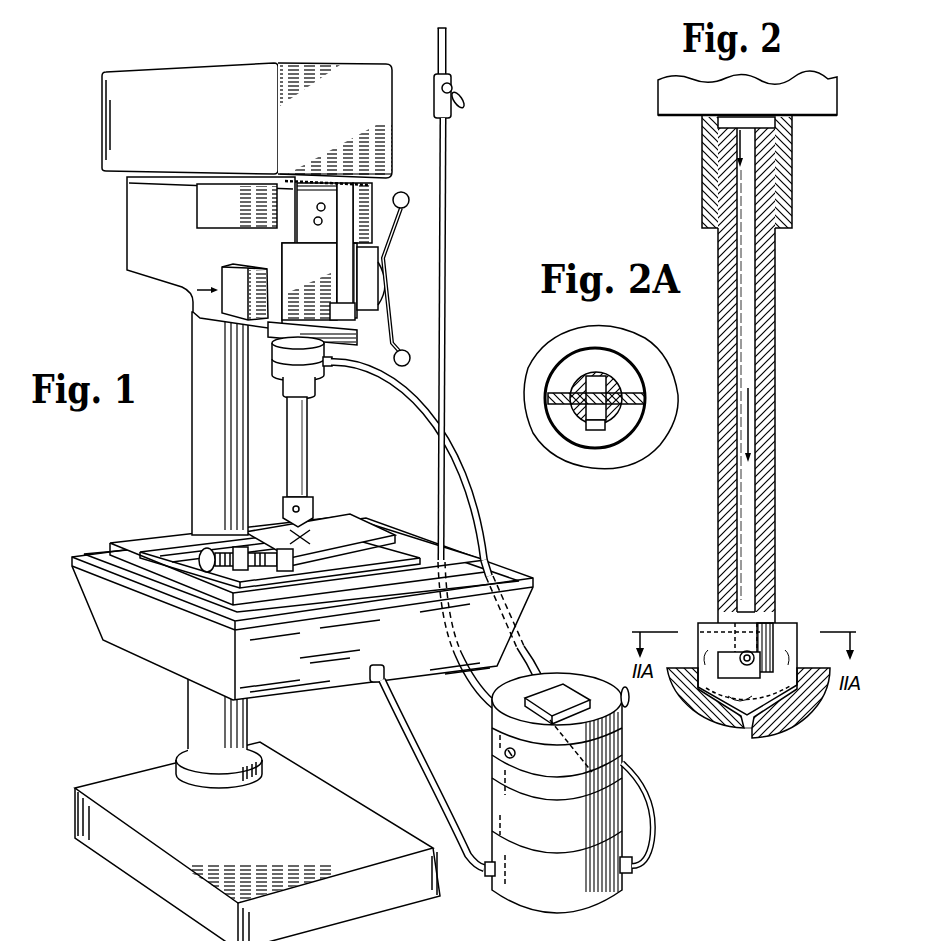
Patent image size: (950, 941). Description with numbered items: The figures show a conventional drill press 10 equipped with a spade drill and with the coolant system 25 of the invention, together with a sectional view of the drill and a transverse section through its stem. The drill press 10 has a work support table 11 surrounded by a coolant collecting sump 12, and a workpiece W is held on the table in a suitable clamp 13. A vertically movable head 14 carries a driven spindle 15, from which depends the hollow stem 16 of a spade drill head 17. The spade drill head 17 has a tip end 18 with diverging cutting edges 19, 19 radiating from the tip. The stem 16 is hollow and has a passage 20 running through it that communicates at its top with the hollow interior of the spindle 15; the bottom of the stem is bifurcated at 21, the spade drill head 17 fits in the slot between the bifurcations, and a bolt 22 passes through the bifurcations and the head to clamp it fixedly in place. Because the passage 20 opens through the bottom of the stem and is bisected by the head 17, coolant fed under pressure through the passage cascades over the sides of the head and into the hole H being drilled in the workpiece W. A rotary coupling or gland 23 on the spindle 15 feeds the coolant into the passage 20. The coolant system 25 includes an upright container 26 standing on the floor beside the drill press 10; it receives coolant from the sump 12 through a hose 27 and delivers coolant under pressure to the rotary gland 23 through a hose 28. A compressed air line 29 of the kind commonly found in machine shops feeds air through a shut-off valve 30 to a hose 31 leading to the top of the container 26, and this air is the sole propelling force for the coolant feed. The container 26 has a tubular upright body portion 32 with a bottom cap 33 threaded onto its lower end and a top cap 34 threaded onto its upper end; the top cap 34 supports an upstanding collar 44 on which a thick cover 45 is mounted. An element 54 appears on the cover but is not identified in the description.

In FIG. 1, the drill press 10 is at (126, 228).
In FIG. 1, the work support table 11 is at (165, 543).
In FIG. 1, the coolant collecting sump 12 is at (128, 616).
In FIG. 1, the clamp 13 is at (218, 540).
In FIG. 1, the vertically movable head 14 is at (258, 333).
In FIG. 1, the driven spindle 15 is at (284, 388).
In FIG. 2, the driven spindle 15 is at (793, 182).
In FIG. 1, the hollow stem 16 is at (303, 447).
In FIG. 2, the hollow stem 16 is at (774, 327).
In FIG. 1, the spade drill head 17 is at (316, 500).
In FIG. 2, the spade drill head 17 is at (788, 625).
In FIG. 2A, the spade drill head 17 is at (648, 406).
In FIG. 2, the tip end 18 is at (748, 730).
In FIG. 2, the cutting edges 19 is at (716, 698).
In FIG. 2, the passage 20 is at (751, 395).
In FIG. 2A, the passage 20 is at (606, 388).
In FIG. 2, the bifurcated bottom end 21 is at (777, 645).
In FIG. 2A, the bifurcated bottom end 21 is at (578, 390).
In FIG. 2, the bolt 22 is at (733, 662).
In FIG. 2A, the bolt 22 is at (606, 432).
In FIG. 1, the rotary coupling or gland 23 is at (272, 358).
In FIG. 2, the rotary coupling or gland 23 is at (829, 98).
In FIG. 1, the coolant system 25 is at (542, 760).
In FIG. 1, the upright container 26 is at (624, 895).
In FIG. 1, the hose 27 is at (421, 754).
In FIG. 1, the hose 28 is at (472, 513).
In FIG. 1, the compressed air line 29 is at (448, 46).
In FIG. 1, the shut-off valve 30 is at (453, 90).
In FIG. 1, the hose 31 is at (447, 208).
In FIG. 1, the tubular upright body portion 32 is at (553, 839).
In FIG. 1, the bottom cap 33 is at (542, 887).
In FIG. 1, the top cap 34 is at (563, 807).
In FIG. 1, the upstanding collar 44 is at (560, 775).
In FIG. 1, the thick cover 45 is at (496, 726).
In FIG. 1, the switch block 54 is at (565, 694).
In FIG. 1, the workpiece W is at (320, 534).
In FIG. 2, the workpiece W is at (813, 707).
In FIG. 2, the hole H is at (684, 696).